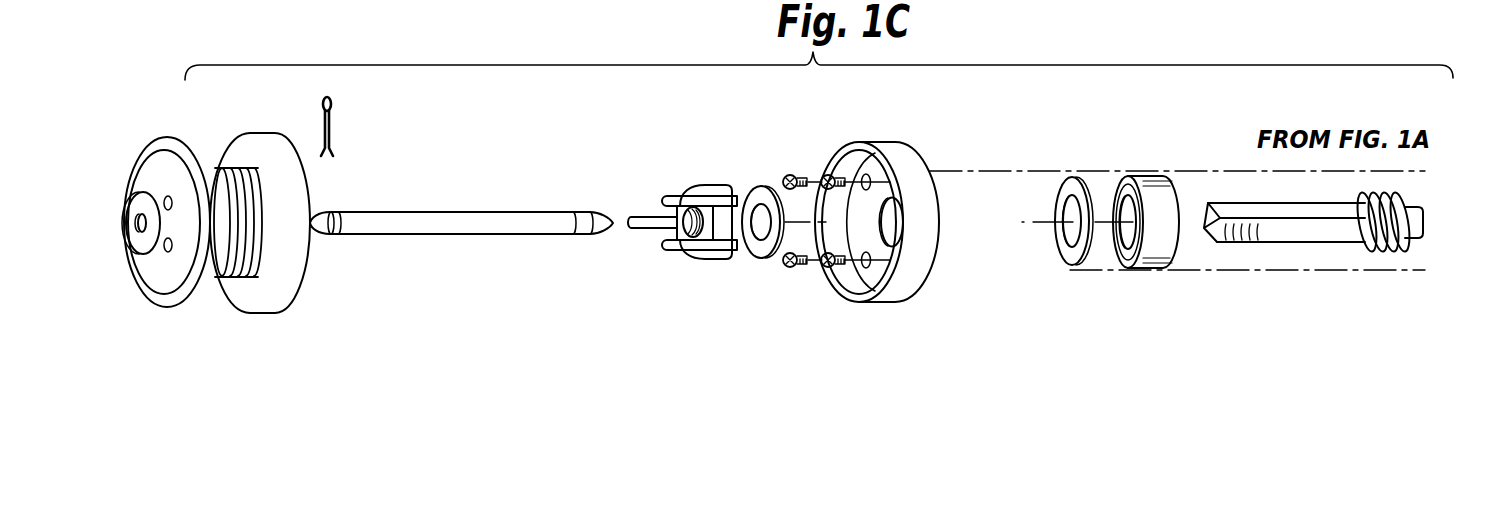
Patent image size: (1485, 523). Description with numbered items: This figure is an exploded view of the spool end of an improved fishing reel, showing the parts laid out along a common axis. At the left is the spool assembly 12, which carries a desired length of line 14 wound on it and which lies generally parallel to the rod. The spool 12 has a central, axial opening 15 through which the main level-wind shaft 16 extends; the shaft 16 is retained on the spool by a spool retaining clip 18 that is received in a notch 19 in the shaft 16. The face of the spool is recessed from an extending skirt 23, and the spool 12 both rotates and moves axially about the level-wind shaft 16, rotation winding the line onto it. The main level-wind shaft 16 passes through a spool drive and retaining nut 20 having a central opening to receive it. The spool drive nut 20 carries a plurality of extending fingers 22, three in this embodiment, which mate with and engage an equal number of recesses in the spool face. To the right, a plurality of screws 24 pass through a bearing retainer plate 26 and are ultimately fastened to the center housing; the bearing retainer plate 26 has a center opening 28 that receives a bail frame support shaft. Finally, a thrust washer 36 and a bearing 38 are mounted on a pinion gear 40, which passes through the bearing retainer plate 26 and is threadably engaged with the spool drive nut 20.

The spool assembly 12 is at (243, 293).
The line 14 is at (227, 172).
The central axial opening 15 is at (140, 228).
The main level-wind shaft 16 is at (427, 224).
The spool retaining clip 18 is at (332, 101).
The notch 19 is at (328, 215).
The spool drive and retaining nut 20 is at (693, 186).
The fingers 22 is at (650, 217).
The skirt 23 is at (290, 190).
The screws 24 is at (792, 175).
The bearing retainer plate 26 is at (880, 303).
The center opening 28 is at (878, 236).
The thrust washer 36 is at (1073, 187).
The bearing 38 is at (1138, 180).
The pinion gear 40 is at (1268, 233).